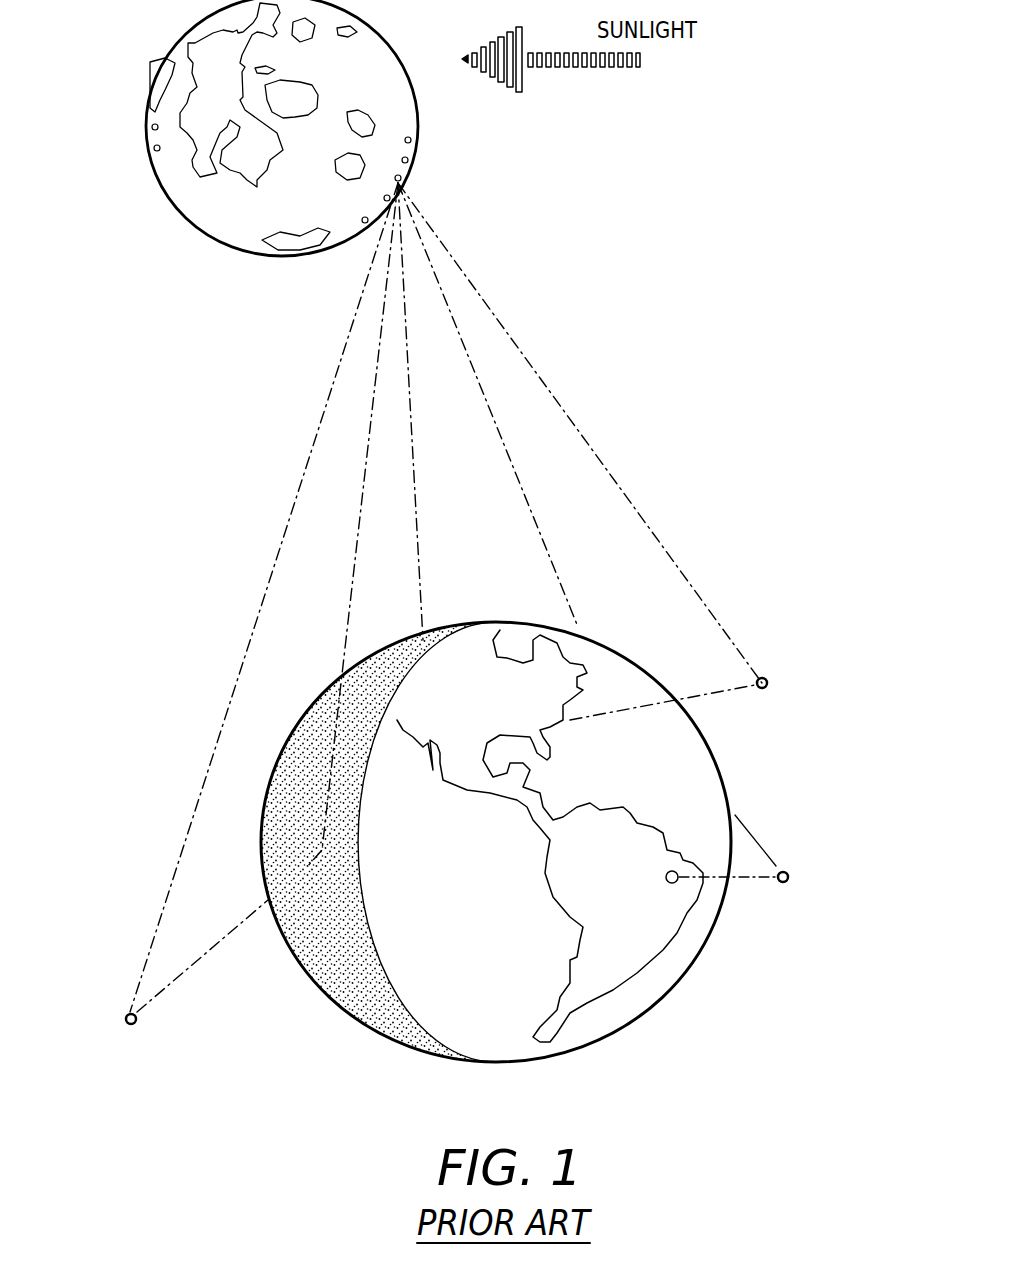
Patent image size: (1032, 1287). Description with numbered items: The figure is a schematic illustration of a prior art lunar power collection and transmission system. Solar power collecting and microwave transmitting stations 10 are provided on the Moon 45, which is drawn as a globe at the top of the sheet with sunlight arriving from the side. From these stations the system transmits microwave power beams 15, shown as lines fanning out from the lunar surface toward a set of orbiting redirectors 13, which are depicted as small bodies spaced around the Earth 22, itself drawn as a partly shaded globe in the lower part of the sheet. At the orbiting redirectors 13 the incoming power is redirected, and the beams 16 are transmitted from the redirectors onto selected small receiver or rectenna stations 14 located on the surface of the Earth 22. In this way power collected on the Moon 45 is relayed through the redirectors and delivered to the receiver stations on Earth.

The solar power collecting and microwave transmitting station 10 is at (147, 152).
The Moon 45 is at (138, 183).
The microwave power beam 15 is at (540, 372).
The Earth 22 is at (722, 776).
The orbiting redirector 13 is at (772, 683).
The beam 16 is at (740, 880).
The receiver or rectenna station 14 is at (682, 890).